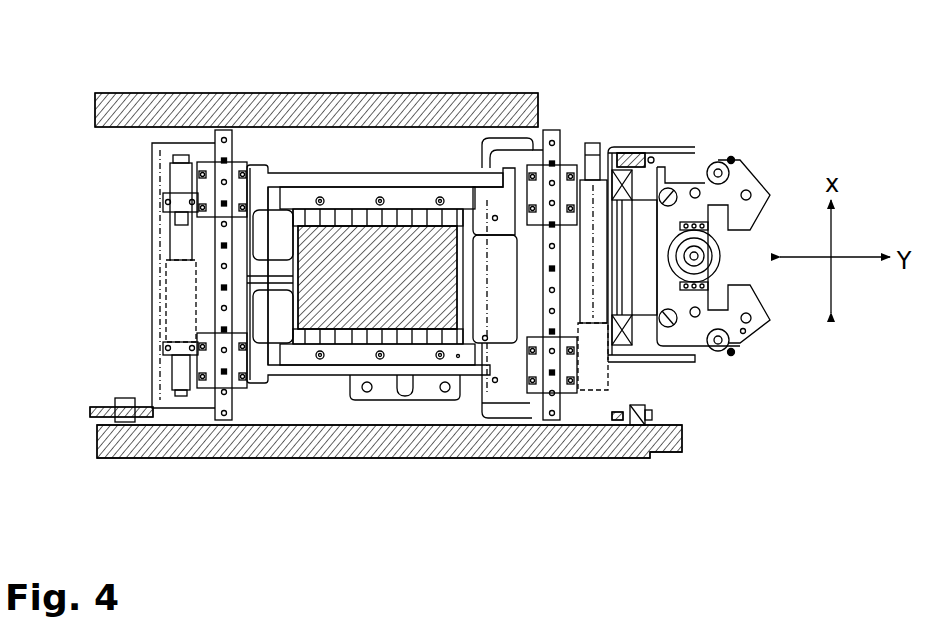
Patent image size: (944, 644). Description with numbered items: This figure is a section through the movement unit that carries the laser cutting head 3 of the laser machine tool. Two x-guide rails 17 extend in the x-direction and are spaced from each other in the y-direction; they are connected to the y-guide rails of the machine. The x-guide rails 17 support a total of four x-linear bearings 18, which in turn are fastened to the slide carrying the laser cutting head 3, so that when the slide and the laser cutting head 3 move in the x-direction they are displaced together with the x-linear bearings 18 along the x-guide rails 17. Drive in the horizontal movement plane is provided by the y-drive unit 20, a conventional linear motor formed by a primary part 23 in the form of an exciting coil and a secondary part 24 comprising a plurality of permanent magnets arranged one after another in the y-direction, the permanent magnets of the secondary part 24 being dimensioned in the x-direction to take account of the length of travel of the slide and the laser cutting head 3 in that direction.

The laser cutting head 3 is at (766, 350).
The x-guide rails 17 is at (218, 268).
The x-linear bearings 18 is at (203, 190).
The y-drive unit 20 is at (416, 200).
The primary part 23 is at (368, 238).
The secondary part 24 is at (312, 212).